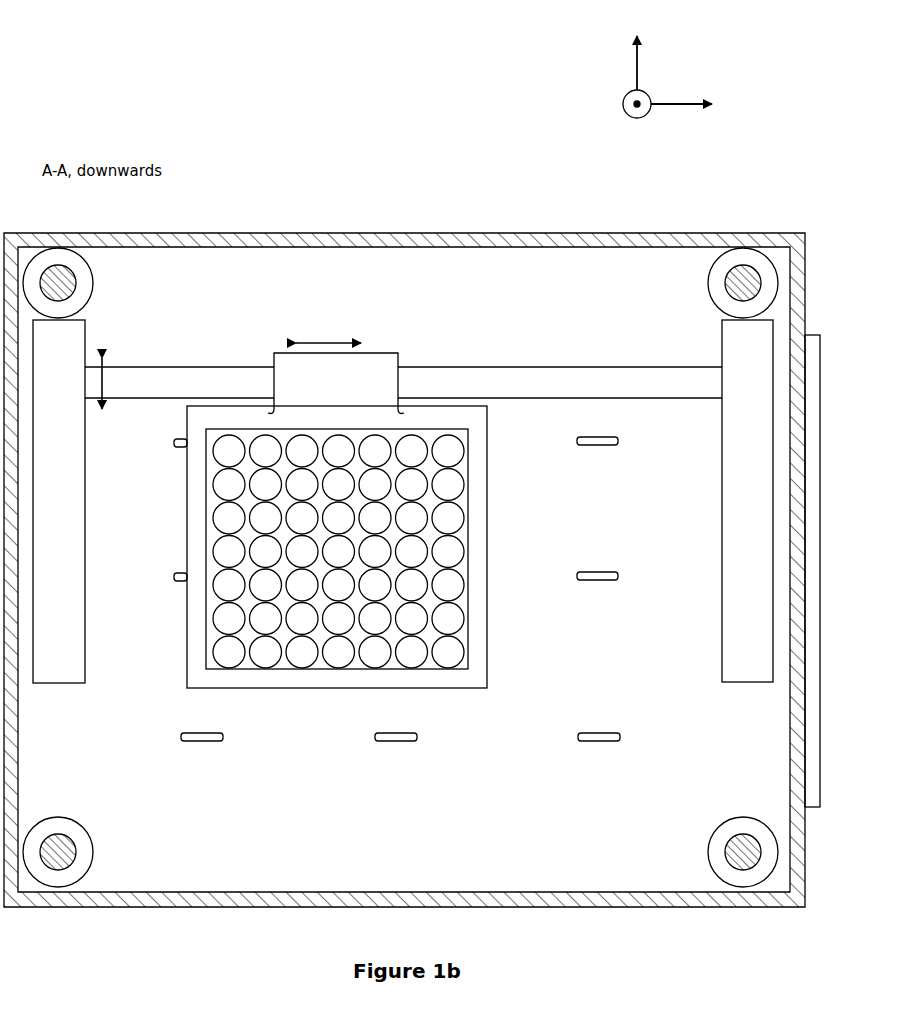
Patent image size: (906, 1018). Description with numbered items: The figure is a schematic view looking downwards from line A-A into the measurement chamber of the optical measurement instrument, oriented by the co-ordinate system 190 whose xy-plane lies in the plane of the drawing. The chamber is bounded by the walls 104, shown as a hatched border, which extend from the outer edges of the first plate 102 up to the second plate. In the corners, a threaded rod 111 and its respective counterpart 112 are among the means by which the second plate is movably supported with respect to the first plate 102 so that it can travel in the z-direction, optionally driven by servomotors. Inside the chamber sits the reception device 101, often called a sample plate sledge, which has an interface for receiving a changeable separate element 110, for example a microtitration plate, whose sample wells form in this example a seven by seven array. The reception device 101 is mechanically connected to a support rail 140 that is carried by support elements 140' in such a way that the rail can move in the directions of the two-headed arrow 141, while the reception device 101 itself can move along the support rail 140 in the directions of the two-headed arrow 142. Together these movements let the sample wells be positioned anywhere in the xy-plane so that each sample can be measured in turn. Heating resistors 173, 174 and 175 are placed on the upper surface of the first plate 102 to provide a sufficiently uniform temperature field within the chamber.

The co-ordinate system 190 is at (662, 58).
The walls 104 is at (190, 908).
The threaded rod 111 is at (733, 835).
The counterpart 112 is at (706, 855).
The support elements 140' is at (403, 501).
The support rail 140 is at (403, 382).
The two-headed arrow 141 is at (108, 352).
The two-headed arrow 142 is at (322, 340).
The reception device 101 is at (357, 395).
The changeable separate element 110 is at (512, 590).
The first plate 102 is at (485, 824).
The heating resistor 173 is at (599, 742).
The heating resistor 174 is at (398, 742).
The heating resistor 175 is at (205, 742).